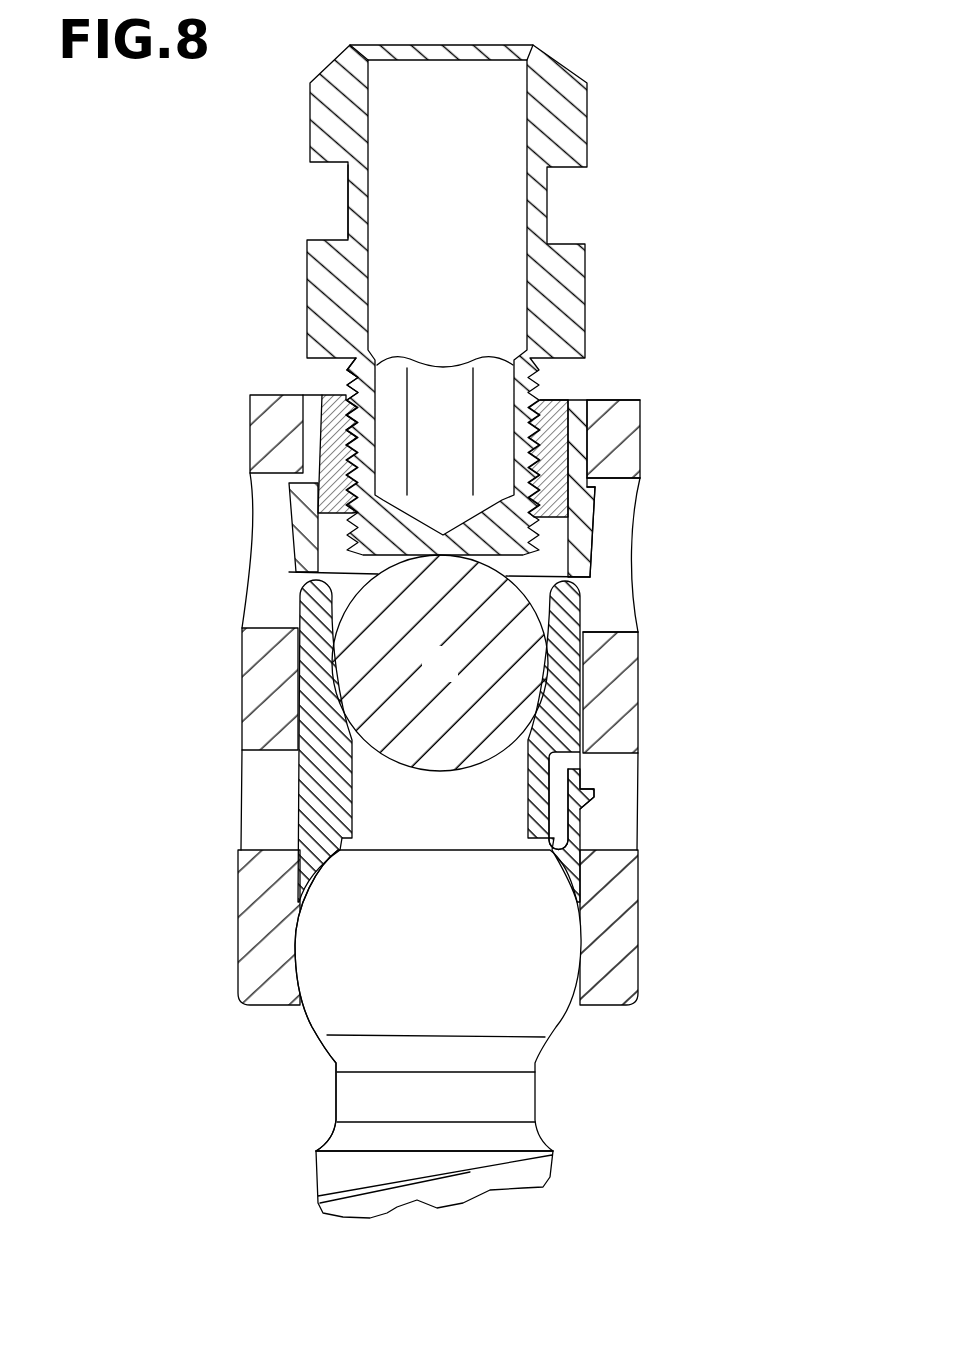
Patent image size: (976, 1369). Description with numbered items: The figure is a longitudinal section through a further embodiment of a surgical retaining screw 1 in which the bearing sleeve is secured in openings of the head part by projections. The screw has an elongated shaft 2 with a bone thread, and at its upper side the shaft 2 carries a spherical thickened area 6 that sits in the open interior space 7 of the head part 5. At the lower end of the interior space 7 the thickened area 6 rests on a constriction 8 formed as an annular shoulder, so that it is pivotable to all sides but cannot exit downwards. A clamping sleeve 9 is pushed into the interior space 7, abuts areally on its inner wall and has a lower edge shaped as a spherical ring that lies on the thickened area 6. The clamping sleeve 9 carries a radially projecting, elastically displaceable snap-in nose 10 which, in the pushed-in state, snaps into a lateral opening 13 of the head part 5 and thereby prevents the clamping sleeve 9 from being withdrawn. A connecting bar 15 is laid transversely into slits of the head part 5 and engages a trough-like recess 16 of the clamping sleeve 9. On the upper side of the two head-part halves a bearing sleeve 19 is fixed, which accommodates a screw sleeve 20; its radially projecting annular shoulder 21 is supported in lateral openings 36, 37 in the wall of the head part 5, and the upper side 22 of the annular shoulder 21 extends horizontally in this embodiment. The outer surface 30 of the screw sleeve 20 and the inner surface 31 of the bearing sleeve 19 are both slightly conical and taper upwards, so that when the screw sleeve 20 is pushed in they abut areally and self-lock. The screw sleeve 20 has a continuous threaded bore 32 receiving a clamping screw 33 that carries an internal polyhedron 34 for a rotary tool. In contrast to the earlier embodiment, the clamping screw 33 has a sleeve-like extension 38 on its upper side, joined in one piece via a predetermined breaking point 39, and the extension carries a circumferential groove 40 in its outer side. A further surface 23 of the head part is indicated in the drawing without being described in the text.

The surgical retaining screw 1 is at (437, 631).
The shaft 2 is at (327, 1167).
The head part 5 is at (236, 683).
The spherical thickened area 6 is at (540, 948).
The interior space 7 is at (306, 735).
The constriction 8 is at (300, 973).
The clamping sleeve 9 is at (594, 690).
The snap-in nose 10 is at (587, 795).
The opening 13 is at (602, 755).
The connecting bar 15 is at (454, 678).
The trough-like recess 16 is at (368, 717).
The bearing sleeve 19 is at (589, 394).
The screw sleeve 20 is at (567, 391).
The annular shoulder 21 is at (597, 492).
The upper side 22 is at (597, 470).
The wall surface 23 is at (602, 518).
The outer surface 30 is at (320, 457).
The inner surface 31 is at (320, 422).
The bore 32 is at (537, 458).
The clamping screw 33 is at (336, 374).
The internal polyhedron 34 is at (422, 450).
The lateral opening 36 is at (267, 530).
The lateral opening 37 is at (607, 587).
The sleeve-like extension 38 is at (597, 70).
The predetermined breaking point 39 is at (368, 357).
The circumferential groove 40 is at (346, 236).